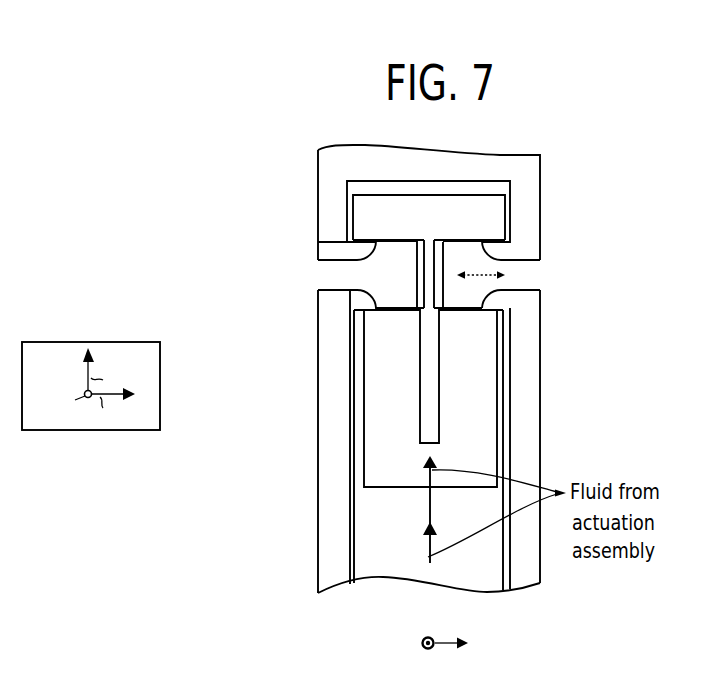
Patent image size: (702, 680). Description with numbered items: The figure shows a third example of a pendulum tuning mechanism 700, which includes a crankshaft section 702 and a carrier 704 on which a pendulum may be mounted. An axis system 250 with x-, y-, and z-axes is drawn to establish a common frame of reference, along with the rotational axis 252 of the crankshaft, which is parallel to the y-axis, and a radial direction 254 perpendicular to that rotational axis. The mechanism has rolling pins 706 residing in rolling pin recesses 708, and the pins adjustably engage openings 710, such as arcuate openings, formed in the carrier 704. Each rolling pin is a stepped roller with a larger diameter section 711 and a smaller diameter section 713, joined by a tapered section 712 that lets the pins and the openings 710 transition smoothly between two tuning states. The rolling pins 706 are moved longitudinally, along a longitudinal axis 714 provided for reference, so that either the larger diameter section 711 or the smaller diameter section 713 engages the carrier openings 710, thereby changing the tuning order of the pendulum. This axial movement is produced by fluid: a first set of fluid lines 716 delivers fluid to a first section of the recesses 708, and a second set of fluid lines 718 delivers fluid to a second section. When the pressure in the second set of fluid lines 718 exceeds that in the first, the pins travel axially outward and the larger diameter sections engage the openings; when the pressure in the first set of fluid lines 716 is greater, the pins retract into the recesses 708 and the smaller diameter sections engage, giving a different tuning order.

The pendulum tuning mechanism 700 is at (629, 223).
The crankshaft section 702 is at (527, 370).
The carrier 704 is at (517, 165).
The rolling pins 706 is at (557, 273).
The rolling pin recesses 708 is at (431, 236).
The openings 710 is at (539, 252).
The larger diameter section 711 is at (468, 240).
The tapered section 712 is at (500, 292).
The smaller diameter section 713 is at (521, 258).
The longitudinal axis 714 is at (495, 272).
The first set of fluid lines 716 is at (370, 488).
The second set of fluid lines 718 is at (418, 403).
The axis system 250 is at (88, 342).
The rotational axis 252 is at (421, 642).
The radial direction 254 is at (445, 637).